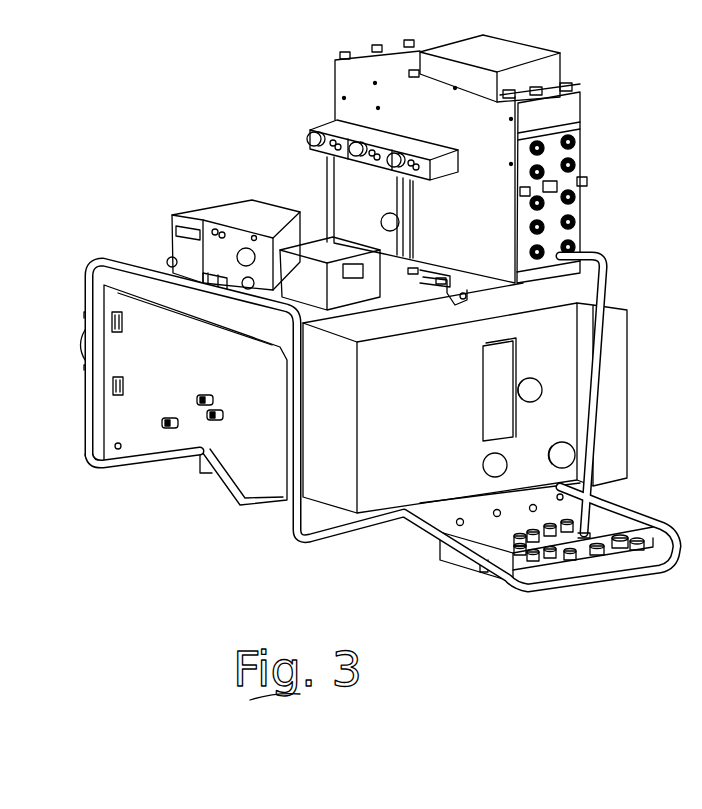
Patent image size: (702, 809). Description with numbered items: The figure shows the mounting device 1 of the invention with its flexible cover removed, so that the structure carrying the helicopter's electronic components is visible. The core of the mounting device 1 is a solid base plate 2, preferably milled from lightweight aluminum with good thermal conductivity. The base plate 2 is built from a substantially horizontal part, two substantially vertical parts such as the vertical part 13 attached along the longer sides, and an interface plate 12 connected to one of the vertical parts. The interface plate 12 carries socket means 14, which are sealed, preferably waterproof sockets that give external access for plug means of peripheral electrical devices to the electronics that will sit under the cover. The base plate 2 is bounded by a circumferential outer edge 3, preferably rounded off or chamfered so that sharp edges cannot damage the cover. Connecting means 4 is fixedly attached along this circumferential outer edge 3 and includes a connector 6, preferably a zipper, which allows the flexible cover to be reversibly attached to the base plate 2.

The mounting device 1 is at (198, 125).
The base plate 2 is at (223, 362).
The circumferential outer edge 3 is at (107, 293).
The connecting means 4 is at (115, 258).
The connector 6 is at (207, 272).
The interface plate 12 is at (587, 563).
The vertical part 13 is at (263, 444).
The socket means 14 is at (637, 553).